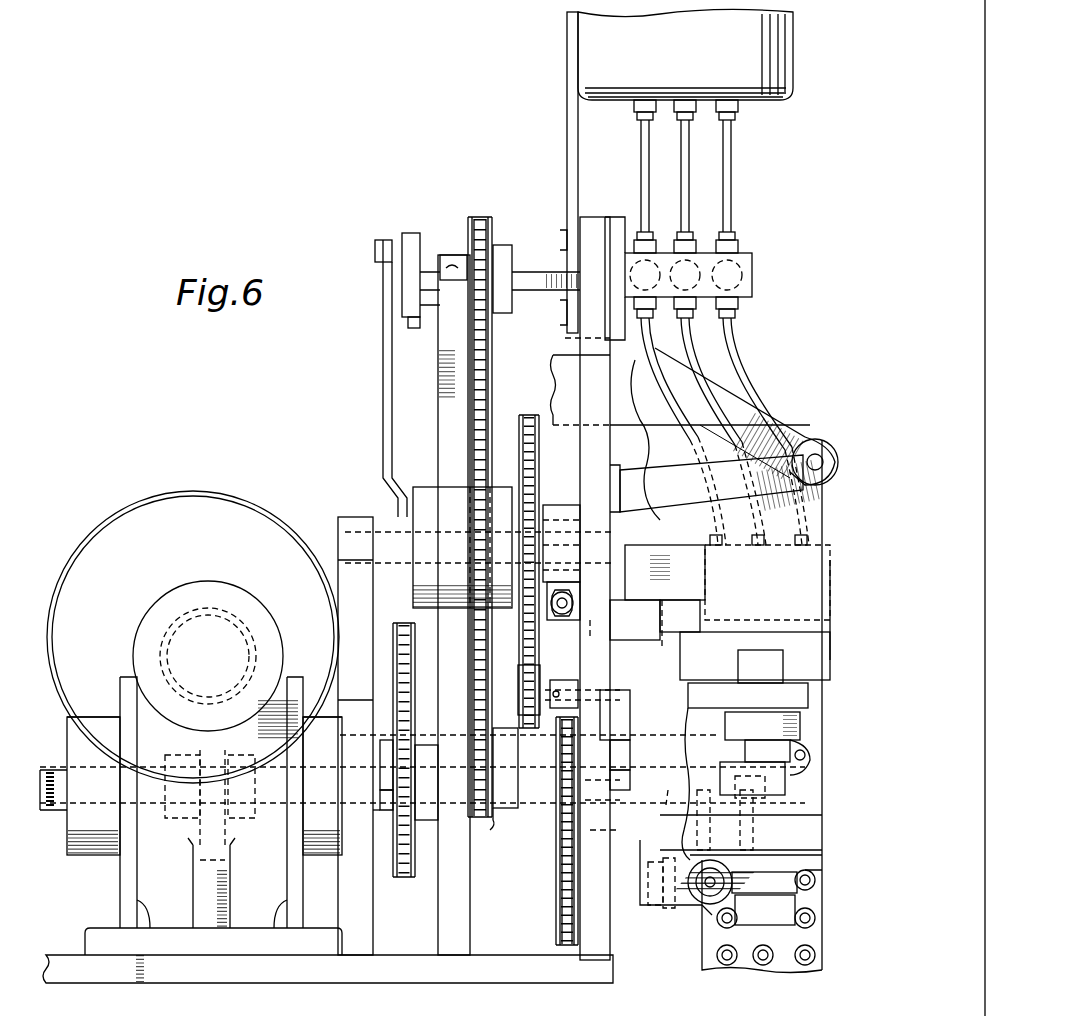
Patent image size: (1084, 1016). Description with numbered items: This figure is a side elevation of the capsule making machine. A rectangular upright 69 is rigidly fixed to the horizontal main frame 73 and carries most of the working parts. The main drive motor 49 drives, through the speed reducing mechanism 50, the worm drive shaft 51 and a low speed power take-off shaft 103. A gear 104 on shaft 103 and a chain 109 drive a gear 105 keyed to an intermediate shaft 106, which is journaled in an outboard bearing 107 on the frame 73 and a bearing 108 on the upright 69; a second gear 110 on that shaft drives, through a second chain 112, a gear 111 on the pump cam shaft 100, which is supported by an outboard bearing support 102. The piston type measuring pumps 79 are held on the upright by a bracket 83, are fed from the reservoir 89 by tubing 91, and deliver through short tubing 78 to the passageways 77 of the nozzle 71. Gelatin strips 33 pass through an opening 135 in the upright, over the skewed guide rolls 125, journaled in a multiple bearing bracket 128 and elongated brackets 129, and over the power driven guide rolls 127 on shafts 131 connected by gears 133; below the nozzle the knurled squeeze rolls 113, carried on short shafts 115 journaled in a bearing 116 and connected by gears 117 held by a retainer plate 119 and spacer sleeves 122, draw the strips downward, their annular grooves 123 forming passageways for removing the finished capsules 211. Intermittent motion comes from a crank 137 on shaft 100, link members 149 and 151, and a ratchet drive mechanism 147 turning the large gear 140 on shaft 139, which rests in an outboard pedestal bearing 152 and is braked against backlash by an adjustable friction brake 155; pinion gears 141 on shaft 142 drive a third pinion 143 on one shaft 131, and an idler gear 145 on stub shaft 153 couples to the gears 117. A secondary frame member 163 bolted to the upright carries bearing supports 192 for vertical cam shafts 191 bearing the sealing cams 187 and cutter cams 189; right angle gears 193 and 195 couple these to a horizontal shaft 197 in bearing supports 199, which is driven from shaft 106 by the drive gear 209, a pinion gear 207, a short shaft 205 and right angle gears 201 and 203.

The gelatin strips 33 is at (700, 458).
The main drive motor 49 is at (192, 510).
The speed reducing mechanism 50 is at (145, 732).
The worm drive shaft 51 is at (58, 770).
The upright 69 is at (582, 440).
The nozzle 71 is at (700, 582).
The main frame 73 is at (490, 975).
The nozzle passageways 77 is at (670, 560).
The tubing 78 is at (735, 342).
The measuring pumps 79 is at (668, 258).
The bracket 83 is at (615, 228).
The reservoir 89 is at (592, 44).
The piping or tubing 91 is at (728, 172).
The pump cam shaft 100 is at (536, 278).
The outboard bearing support 102 is at (446, 255).
The power take-off shaft 103 is at (385, 815).
The gear 104 is at (390, 835).
The gear 105 is at (412, 655).
The intermediate shaft 106 is at (528, 800).
The outboard bearing 107 is at (452, 720).
The bearing 108 is at (602, 785).
The chain 109 is at (400, 686).
The second gear 110 is at (496, 825).
The gear 111 is at (494, 230).
The second chain 112 is at (490, 378).
The squeeze rolls 113 is at (815, 842).
The short shafts 115 is at (666, 791).
The bearing 116 is at (605, 840).
The gears 117 is at (602, 797).
The retainer plate 119 is at (665, 612).
The spacer sleeves 122 is at (635, 615).
The annular grooves 123 is at (746, 786).
The skewed guide rolls 125 is at (790, 430).
The power driven guide rolls 127 is at (730, 640).
The multiple bearing bracket 128 is at (612, 318).
The elongated brackets 129 is at (672, 490).
The supporting shafts 131 is at (633, 625).
The gears 133 is at (562, 620).
The opening 135 is at (565, 338).
The crank 137 is at (398, 242).
The rotatable shaft 139 is at (385, 540).
The large gear 140 is at (529, 416).
The pinion gears 141 is at (520, 708).
The rotatable shaft 142 is at (578, 698).
The third pinion 143 is at (582, 681).
The idler gear 145 is at (632, 778).
The ratchet drive mechanism 147 is at (425, 498).
The link member 149 is at (383, 345).
The link member 151 is at (378, 240).
The outboard pedestal bearing 152 is at (340, 598).
The stub shaft 153 is at (632, 764).
The adjustable friction brake 155 is at (560, 508).
The secondary frame member 163 is at (700, 784).
The cams 187 is at (730, 728).
The cams 189 is at (732, 770).
The vertical cam shafts 191 is at (745, 750).
The bearing supports 192 is at (782, 685).
The right angle gear 193 is at (740, 874).
The right angle gear 195 is at (704, 896).
The horizontal shaft 197 is at (690, 892).
The bearing supports 199 is at (648, 905).
The right angle gear 201 is at (695, 925).
The right angle gear 203 is at (650, 915).
The short shaft 205 is at (626, 888).
The pinion gear 207 is at (556, 918).
The drive gear 209 is at (557, 814).
The capsules 211 is at (800, 945).